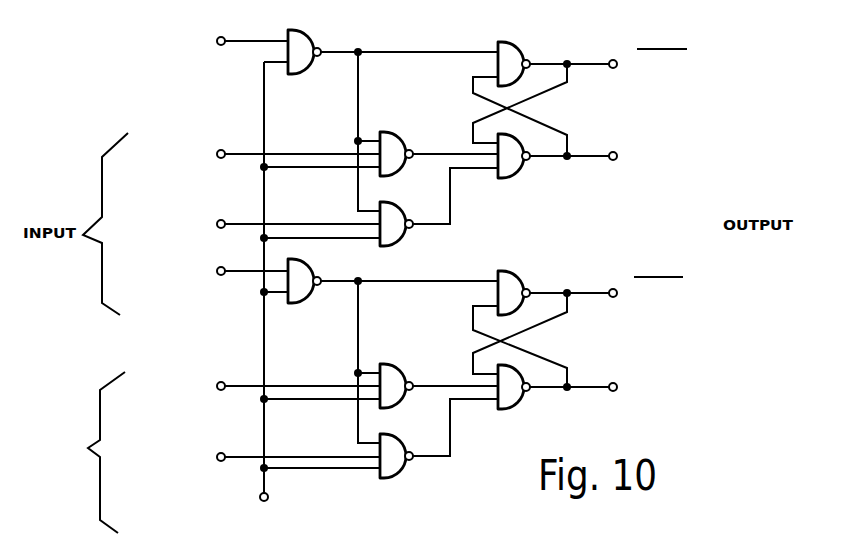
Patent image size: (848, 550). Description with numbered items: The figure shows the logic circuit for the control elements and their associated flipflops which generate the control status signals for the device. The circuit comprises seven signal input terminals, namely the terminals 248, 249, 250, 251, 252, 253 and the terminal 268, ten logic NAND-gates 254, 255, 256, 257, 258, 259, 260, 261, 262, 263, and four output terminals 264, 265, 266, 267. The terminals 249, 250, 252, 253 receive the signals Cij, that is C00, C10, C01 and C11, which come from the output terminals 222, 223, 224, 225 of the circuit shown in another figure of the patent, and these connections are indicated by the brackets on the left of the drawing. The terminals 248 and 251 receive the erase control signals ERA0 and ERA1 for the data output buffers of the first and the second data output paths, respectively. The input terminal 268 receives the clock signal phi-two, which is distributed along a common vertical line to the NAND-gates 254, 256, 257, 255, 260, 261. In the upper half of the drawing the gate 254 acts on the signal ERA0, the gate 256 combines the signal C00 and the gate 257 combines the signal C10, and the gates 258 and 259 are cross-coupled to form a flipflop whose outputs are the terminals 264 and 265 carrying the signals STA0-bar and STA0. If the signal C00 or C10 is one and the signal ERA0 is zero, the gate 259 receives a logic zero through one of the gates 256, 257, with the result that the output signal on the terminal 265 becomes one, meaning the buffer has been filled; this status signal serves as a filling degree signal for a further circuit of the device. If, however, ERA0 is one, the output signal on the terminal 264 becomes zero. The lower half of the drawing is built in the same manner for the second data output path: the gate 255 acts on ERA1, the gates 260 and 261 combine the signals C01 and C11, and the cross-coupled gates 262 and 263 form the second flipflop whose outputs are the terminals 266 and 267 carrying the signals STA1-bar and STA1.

The output terminal of FIG. 8 222 is at (120, 224).
The output terminal of FIG. 8 223 is at (89, 452).
The output terminal of FIG. 8 224 is at (124, 258).
The output terminal of FIG. 8 225 is at (126, 488).
The signal input terminal 248 is at (223, 37).
The signal input terminal 249 is at (223, 150).
The signal input terminal 250 is at (223, 220).
The signal input terminal 251 is at (223, 267).
The signal input terminal 252 is at (223, 382).
The signal input terminal 253 is at (223, 453).
The logic NAND-gate 254 is at (312, 38).
The logic NAND-gate 255 is at (305, 303).
The logic NAND-gate 256 is at (396, 134).
The logic NAND-gate 257 is at (396, 246).
The logic NAND-gate 258 is at (526, 33).
The logic NAND-gate 259 is at (516, 177).
The logic NAND-gate 260 is at (396, 366).
The logic NAND-gate 261 is at (398, 440).
The logic NAND-gate 262 is at (516, 271).
The logic NAND-gate 263 is at (516, 408).
The output terminal 264 is at (613, 68).
The output terminal 265 is at (613, 160).
The output terminal 266 is at (613, 297).
The output terminal 267 is at (613, 391).
The signal input terminal 268 is at (259, 499).